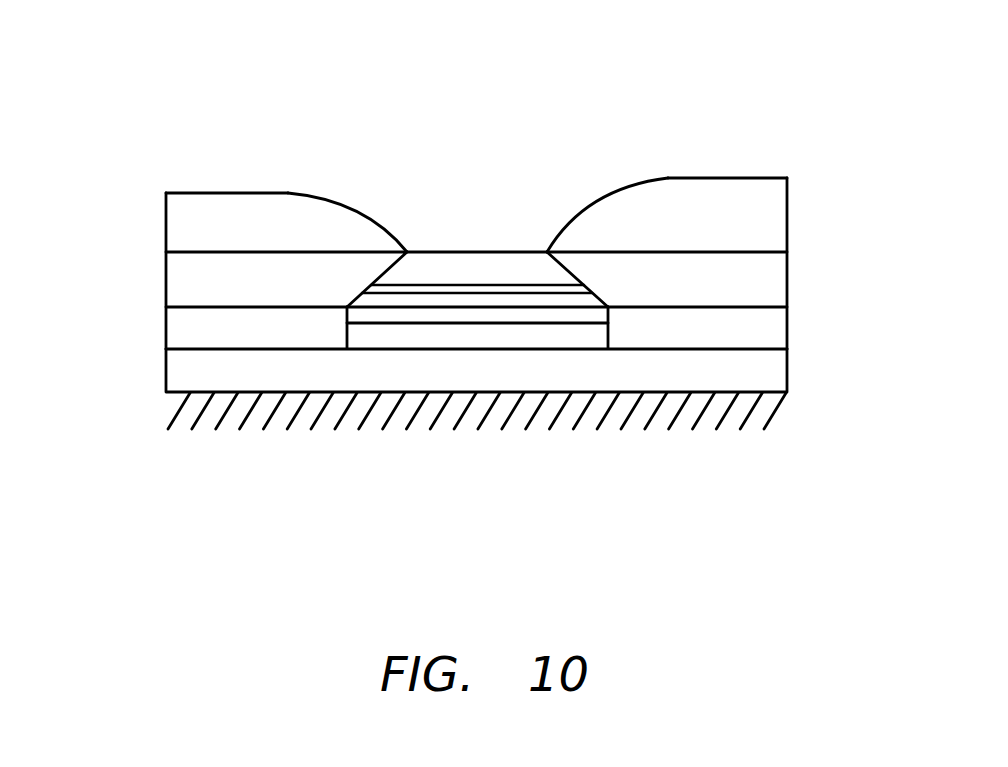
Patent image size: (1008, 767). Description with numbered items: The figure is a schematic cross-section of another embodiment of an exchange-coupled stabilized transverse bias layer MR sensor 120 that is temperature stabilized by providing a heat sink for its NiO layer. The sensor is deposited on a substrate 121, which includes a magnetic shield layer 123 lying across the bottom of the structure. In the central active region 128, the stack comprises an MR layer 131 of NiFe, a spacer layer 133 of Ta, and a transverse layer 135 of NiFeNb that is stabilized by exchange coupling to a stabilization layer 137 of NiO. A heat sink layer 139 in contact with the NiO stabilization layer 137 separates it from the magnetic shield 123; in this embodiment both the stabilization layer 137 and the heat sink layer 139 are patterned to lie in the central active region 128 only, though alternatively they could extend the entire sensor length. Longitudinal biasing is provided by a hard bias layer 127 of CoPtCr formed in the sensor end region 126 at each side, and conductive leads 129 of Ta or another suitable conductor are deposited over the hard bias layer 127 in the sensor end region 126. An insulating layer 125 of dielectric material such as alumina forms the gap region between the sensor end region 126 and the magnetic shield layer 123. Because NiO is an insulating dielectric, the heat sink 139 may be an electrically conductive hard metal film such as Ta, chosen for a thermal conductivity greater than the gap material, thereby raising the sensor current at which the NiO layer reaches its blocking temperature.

The MR sensor 120 is at (138, 376).
The substrate 121 is at (615, 452).
The magnetic shield layer 123 is at (788, 370).
The insulating layer 125 is at (153, 332).
The sensor end region 126 is at (282, 160).
The hard bias layer 127 is at (788, 263).
The central active region 128 is at (475, 192).
The conductive leads 129 is at (788, 212).
The MR layer 131 is at (520, 242).
The spacer layer 133 is at (366, 300).
The transverse layer 135 is at (368, 303).
The stabilization layer 137 is at (613, 303).
The heat sink layer 139 is at (598, 340).